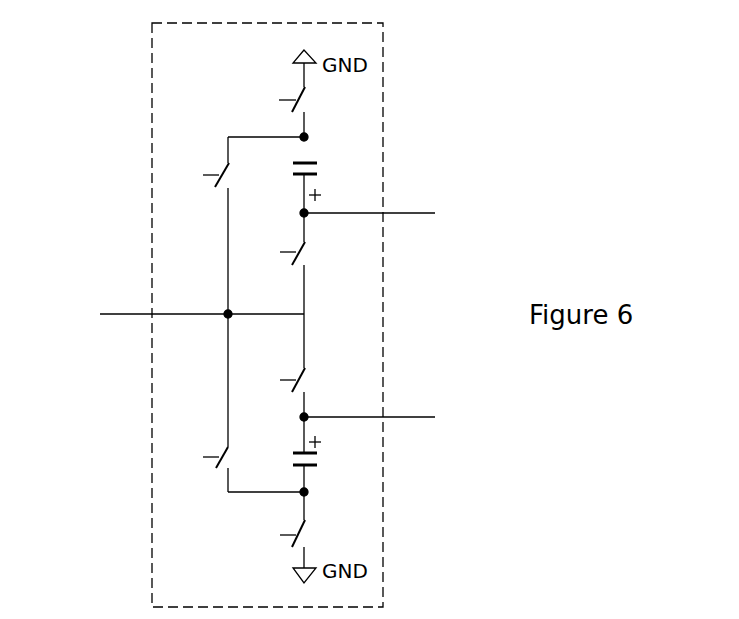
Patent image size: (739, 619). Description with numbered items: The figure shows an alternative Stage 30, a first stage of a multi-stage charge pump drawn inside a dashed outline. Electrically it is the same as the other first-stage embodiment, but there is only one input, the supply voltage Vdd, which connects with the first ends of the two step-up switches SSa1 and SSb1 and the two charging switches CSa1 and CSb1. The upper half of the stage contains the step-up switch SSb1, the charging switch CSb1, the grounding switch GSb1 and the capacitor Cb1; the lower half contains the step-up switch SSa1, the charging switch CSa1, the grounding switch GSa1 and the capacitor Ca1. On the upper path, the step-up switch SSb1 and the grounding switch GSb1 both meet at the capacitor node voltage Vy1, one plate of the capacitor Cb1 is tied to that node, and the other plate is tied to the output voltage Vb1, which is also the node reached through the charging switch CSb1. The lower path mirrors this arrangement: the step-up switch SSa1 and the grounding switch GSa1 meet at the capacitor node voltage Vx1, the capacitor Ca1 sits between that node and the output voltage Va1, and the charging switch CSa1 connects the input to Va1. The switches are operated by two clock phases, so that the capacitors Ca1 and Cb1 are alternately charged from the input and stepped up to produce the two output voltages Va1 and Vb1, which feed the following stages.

The alternative Stage 1 30 is at (191, 77).
The grounding switch GSb1 is at (297, 112).
The step-up switch SSb1 is at (221, 304).
The capacitor Cb1 is at (323, 185).
The charging switch CSb1 is at (301, 290).
The charging switch CSa1 is at (296, 410).
The capacitor Ca1 is at (323, 478).
The step-up switch SSa1 is at (226, 469).
The grounding switch GSa1 is at (302, 544).
The input voltage Vdd is at (178, 318).
The output voltage Vb1 is at (384, 198).
The output voltage Va1 is at (384, 402).
The capacitor node voltage Vy1 is at (284, 142).
The capacitor node voltage Vx1 is at (284, 499).